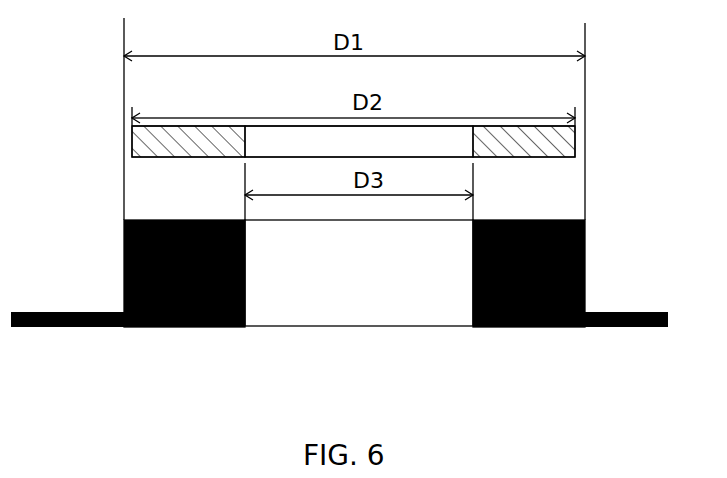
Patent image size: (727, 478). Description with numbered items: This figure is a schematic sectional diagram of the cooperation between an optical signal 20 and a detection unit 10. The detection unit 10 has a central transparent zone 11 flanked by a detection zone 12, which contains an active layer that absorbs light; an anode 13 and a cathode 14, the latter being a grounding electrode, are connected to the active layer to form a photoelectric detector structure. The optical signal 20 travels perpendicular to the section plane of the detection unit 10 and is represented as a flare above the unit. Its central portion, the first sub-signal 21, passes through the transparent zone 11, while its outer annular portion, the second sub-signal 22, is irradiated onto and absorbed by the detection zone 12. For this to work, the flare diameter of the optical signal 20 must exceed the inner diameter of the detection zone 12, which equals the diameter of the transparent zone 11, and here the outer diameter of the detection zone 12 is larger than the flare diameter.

The detection unit 10 is at (349, 303).
The transparent zone 11 is at (316, 305).
The detection zone 12 is at (546, 328).
The anode 13 is at (88, 328).
The cathode 14 is at (642, 328).
The optical signal 20 is at (307, 109).
The first sub-signal 21 is at (283, 143).
The second sub-signal 22 is at (177, 137).